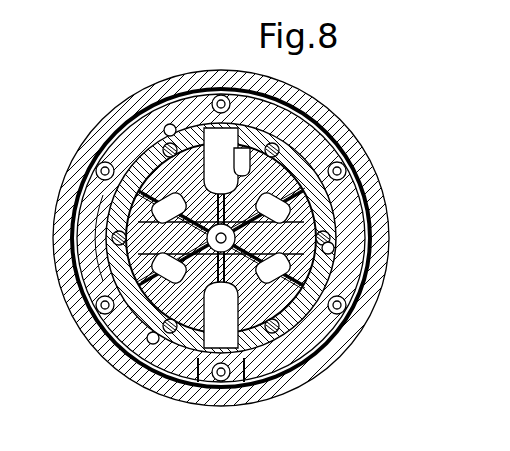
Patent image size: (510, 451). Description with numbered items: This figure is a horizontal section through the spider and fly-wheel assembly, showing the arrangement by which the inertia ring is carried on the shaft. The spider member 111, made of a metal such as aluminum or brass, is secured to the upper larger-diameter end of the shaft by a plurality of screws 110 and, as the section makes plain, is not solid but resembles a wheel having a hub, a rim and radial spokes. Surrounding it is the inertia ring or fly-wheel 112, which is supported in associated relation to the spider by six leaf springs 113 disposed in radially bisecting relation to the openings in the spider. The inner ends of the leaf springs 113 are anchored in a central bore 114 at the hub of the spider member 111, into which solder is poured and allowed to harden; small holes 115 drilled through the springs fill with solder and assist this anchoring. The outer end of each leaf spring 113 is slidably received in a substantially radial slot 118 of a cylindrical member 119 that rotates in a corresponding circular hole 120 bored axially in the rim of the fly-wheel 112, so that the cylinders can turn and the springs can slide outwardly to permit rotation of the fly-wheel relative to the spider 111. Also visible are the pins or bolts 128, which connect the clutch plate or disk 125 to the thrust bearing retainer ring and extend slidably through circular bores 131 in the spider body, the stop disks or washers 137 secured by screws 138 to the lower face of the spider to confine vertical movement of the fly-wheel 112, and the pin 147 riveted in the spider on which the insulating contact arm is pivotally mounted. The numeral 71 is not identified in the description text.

The outer housing ring 71 is at (118, 100).
The screws 110 is at (268, 233).
The spider member 111 is at (138, 320).
The fly-wheel 112 is at (72, 243).
The leaf springs 113 is at (221, 238).
The bore 114 is at (221, 238).
The small holes 115 is at (251, 163).
The radial slot 118 is at (192, 374).
The cylindrical member 119 is at (93, 160).
The circular hole 120 is at (225, 374).
The clutch plate or disk 125 is at (300, 265).
The pins or bolts 128 is at (162, 116).
The circular bores 131 is at (148, 140).
The stop disks or washers 137 is at (105, 208).
The screws 138 is at (95, 215).
The pin 147 is at (88, 228).